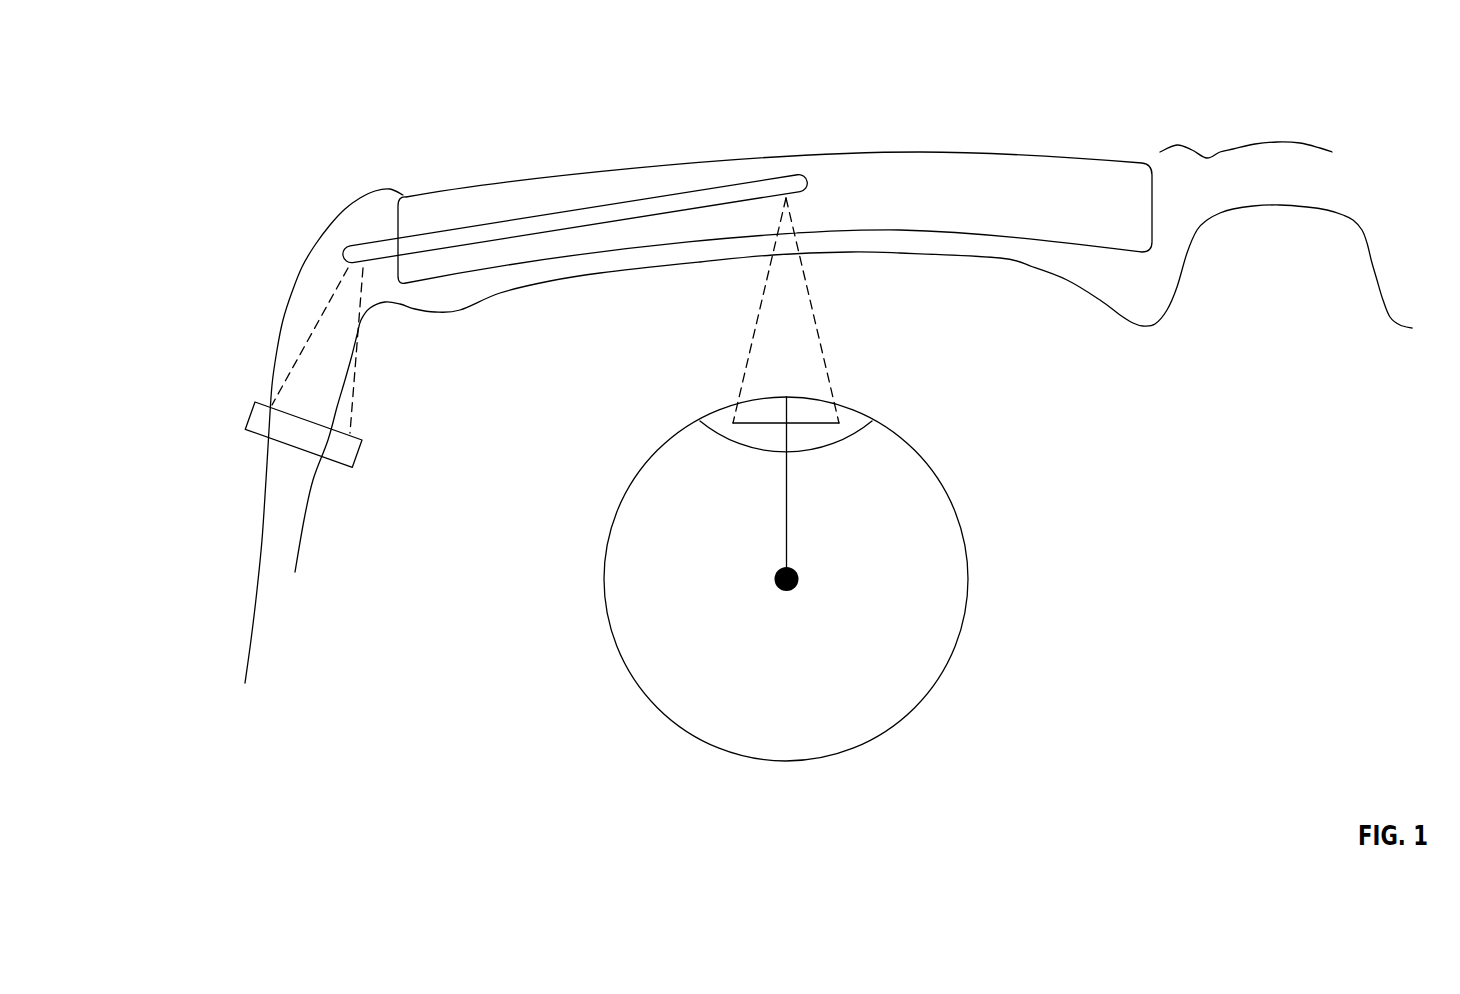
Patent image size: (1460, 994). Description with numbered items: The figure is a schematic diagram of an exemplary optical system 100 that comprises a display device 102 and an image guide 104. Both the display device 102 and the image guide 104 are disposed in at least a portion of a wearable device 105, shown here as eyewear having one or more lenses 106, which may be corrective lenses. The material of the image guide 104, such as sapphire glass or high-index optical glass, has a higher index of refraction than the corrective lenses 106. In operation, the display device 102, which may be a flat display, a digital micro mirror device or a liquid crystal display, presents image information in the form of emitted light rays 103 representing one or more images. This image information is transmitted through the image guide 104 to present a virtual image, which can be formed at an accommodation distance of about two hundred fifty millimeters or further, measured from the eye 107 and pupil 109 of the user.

The optical system 100 is at (691, 173).
The display device 102 is at (253, 405).
The emitted light rays 103 is at (313, 327).
The image guide 104 is at (354, 240).
The wearable device 105 is at (263, 512).
The lenses 106 is at (533, 175).
The eye 107 is at (922, 458).
The pupil 109 is at (723, 408).